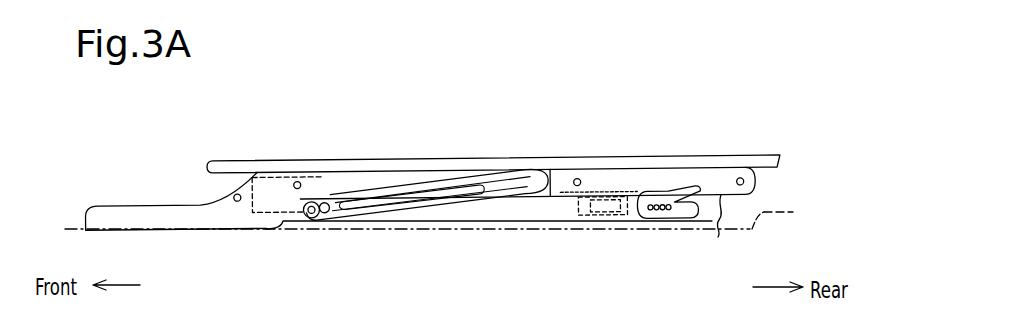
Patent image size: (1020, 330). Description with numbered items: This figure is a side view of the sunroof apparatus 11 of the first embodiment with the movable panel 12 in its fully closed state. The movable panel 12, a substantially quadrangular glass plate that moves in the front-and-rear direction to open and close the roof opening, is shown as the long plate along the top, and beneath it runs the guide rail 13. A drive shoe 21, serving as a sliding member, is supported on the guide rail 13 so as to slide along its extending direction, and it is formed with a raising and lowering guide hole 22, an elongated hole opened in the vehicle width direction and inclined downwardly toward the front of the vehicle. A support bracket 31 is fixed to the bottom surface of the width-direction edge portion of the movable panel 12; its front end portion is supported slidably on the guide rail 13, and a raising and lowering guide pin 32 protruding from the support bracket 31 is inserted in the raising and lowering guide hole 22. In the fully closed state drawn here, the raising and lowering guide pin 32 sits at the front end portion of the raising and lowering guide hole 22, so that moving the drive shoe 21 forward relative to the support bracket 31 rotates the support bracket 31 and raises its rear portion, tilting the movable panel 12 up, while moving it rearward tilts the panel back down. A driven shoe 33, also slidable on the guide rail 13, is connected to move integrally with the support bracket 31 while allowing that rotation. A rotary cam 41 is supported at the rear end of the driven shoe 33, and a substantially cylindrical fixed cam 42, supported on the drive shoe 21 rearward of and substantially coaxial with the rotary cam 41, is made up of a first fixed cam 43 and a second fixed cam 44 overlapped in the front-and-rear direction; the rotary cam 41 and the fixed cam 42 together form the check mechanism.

The sunroof apparatus 11 is at (772, 129).
The movable panel 12 is at (438, 157).
The guide rail 13 is at (443, 214).
The drive shoe 21 is at (643, 225).
The raising and lowering guide hole 22 is at (411, 217).
The support bracket 31 is at (718, 232).
The raising and lowering guide pin 32 is at (326, 220).
The driven shoe 33 is at (266, 226).
The rotary cam 41 is at (380, 228).
The fixed cam 42 is at (593, 261).
The first fixed cam 43 is at (612, 234).
The second fixed cam 44 is at (579, 234).